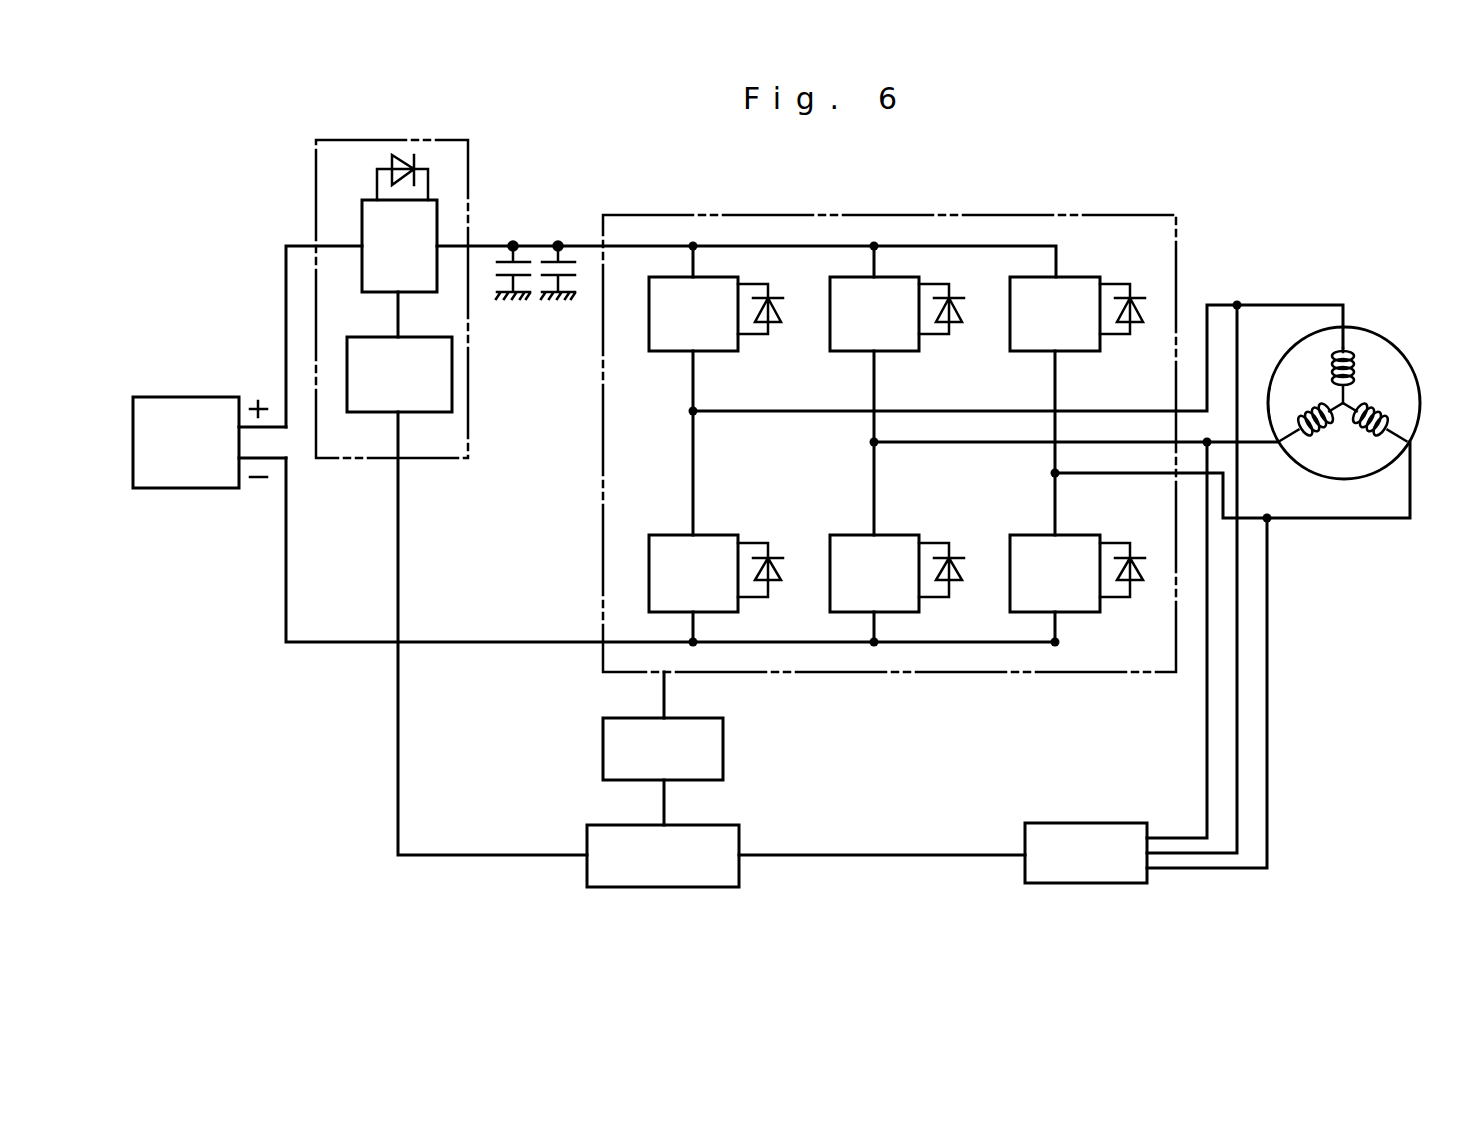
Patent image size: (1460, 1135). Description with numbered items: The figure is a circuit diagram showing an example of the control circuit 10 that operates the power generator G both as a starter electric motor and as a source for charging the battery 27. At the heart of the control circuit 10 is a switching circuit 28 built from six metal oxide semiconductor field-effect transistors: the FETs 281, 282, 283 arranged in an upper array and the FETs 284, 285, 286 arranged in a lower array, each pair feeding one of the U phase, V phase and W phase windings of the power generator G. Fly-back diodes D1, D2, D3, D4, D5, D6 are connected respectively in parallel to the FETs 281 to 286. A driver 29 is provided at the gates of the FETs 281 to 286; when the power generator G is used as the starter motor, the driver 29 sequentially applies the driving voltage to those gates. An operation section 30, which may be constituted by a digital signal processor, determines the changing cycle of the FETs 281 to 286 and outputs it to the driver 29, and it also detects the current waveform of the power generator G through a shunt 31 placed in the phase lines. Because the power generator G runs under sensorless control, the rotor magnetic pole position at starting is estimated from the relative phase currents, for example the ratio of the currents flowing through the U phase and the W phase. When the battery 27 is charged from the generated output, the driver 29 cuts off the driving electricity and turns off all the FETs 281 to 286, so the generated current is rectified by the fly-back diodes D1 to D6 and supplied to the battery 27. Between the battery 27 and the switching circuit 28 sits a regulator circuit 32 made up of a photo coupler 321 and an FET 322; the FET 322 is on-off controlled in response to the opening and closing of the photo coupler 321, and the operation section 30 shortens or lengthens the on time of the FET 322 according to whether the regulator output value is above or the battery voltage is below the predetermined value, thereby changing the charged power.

The control circuit 10 is at (1016, 195).
The battery 27 is at (170, 489).
The switching circuit 28 is at (1133, 215).
The driver 29 is at (710, 781).
The operation section 30 is at (728, 888).
The shunt 31 is at (1130, 884).
The regulator circuit 32 is at (437, 459).
The photo coupler 321 is at (386, 412).
The FET 322 is at (385, 293).
The FET 281 is at (679, 352).
The FET 282 is at (861, 352).
The FET 283 is at (1045, 352).
The FET 284 is at (679, 534).
The FET 285 is at (861, 534).
The FET 286 is at (1045, 534).
The fly-back diode D1 is at (781, 313).
The fly-back diode D2 is at (962, 313).
The fly-back diode D3 is at (1143, 313).
The fly-back diode D4 is at (781, 572).
The fly-back diode D5 is at (962, 572).
The fly-back diode D6 is at (1143, 572).
The power generator G is at (1376, 328).
The U phase U is at (1344, 289).
The V phase V is at (1254, 422).
The W phase W is at (1433, 452).